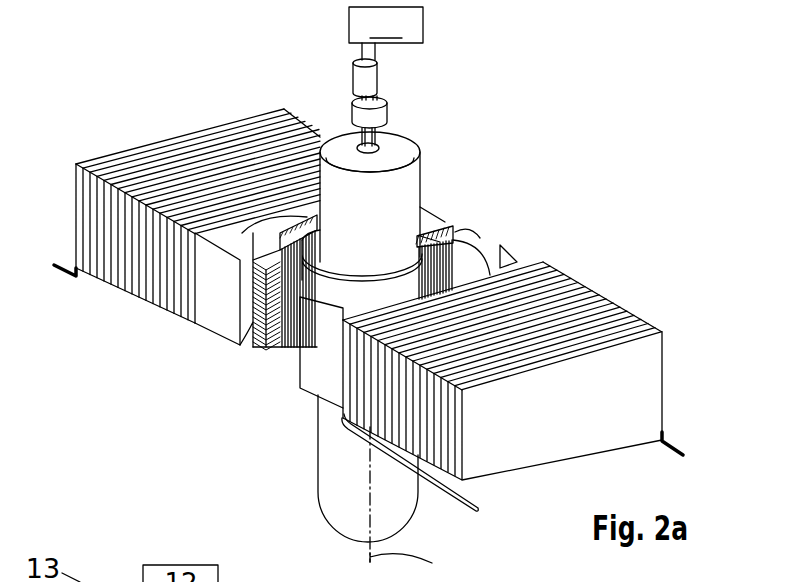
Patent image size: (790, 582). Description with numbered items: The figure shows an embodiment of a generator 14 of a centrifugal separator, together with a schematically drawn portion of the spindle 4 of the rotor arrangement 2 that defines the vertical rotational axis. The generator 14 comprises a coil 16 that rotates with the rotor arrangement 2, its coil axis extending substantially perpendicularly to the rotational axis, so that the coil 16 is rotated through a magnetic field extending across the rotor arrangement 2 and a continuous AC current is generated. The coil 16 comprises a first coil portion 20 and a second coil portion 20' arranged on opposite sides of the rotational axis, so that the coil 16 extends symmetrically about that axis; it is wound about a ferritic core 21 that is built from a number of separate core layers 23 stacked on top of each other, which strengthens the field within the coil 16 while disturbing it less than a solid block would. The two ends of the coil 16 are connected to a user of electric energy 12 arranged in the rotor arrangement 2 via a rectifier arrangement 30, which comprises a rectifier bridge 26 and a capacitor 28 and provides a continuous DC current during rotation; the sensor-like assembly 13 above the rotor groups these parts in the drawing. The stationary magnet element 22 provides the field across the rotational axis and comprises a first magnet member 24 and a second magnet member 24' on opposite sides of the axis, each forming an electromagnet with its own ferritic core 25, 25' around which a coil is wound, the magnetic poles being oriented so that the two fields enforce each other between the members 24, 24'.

The rotor arrangement 2 is at (207, 451).
The spindle 4 is at (328, 474).
The user of electric energy 12 is at (386, 25).
The sensor assembly 13 is at (490, 46).
The generator 14 is at (590, 168).
The coil 16 is at (460, 212).
The first coil portion 20 is at (291, 319).
The second coil portion 20' is at (482, 232).
The ferritic core 21 is at (273, 238).
The magnet element 22 is at (210, 413).
The core layers 23 is at (271, 353).
The first magnet member 24 is at (187, 204).
The second magnet member 24' is at (523, 369).
The ferritic core 25 is at (388, 191).
The ferritic core 25' is at (548, 225).
The rectifier bridge 26 is at (378, 115).
The capacitor 28 is at (372, 78).
The rectifier arrangement 30 is at (500, 76).